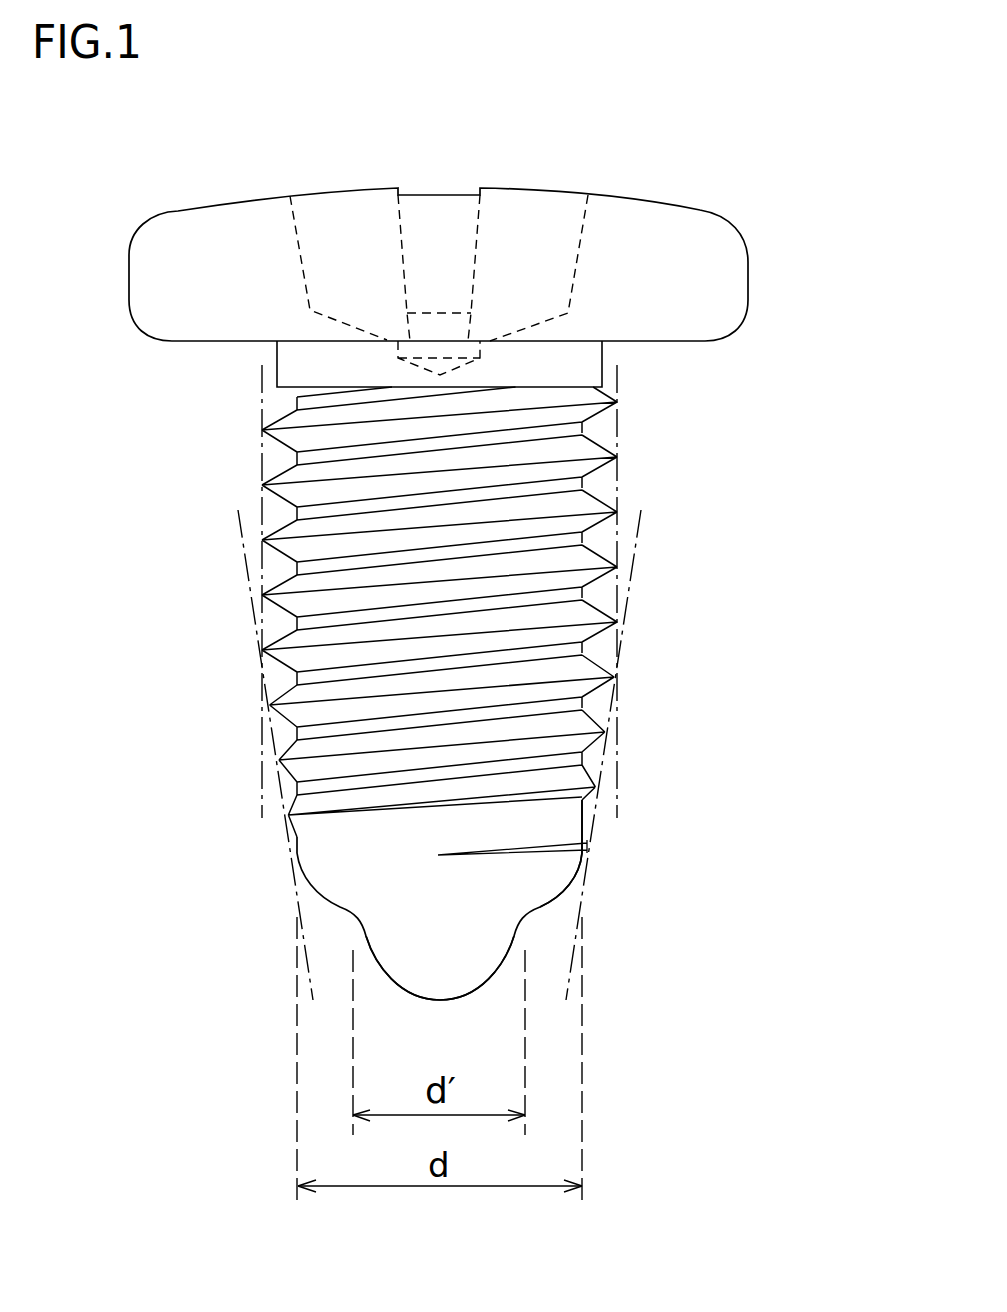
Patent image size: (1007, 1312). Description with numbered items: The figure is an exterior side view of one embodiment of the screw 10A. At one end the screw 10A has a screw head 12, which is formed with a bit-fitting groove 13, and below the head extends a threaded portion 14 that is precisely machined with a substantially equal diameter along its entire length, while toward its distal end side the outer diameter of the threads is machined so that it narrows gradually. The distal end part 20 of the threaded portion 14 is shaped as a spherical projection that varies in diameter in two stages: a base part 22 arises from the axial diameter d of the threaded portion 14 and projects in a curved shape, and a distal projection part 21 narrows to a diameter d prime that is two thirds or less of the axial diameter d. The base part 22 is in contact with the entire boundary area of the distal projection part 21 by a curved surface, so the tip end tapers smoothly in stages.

The screw 10A is at (637, 168).
The screw head 12 is at (692, 290).
The bit-fitting groove 13 is at (302, 260).
The threaded portion 14 is at (478, 515).
The distal end part 20 is at (345, 853).
The distal projection part 21 is at (422, 967).
The base part 22 is at (527, 877).